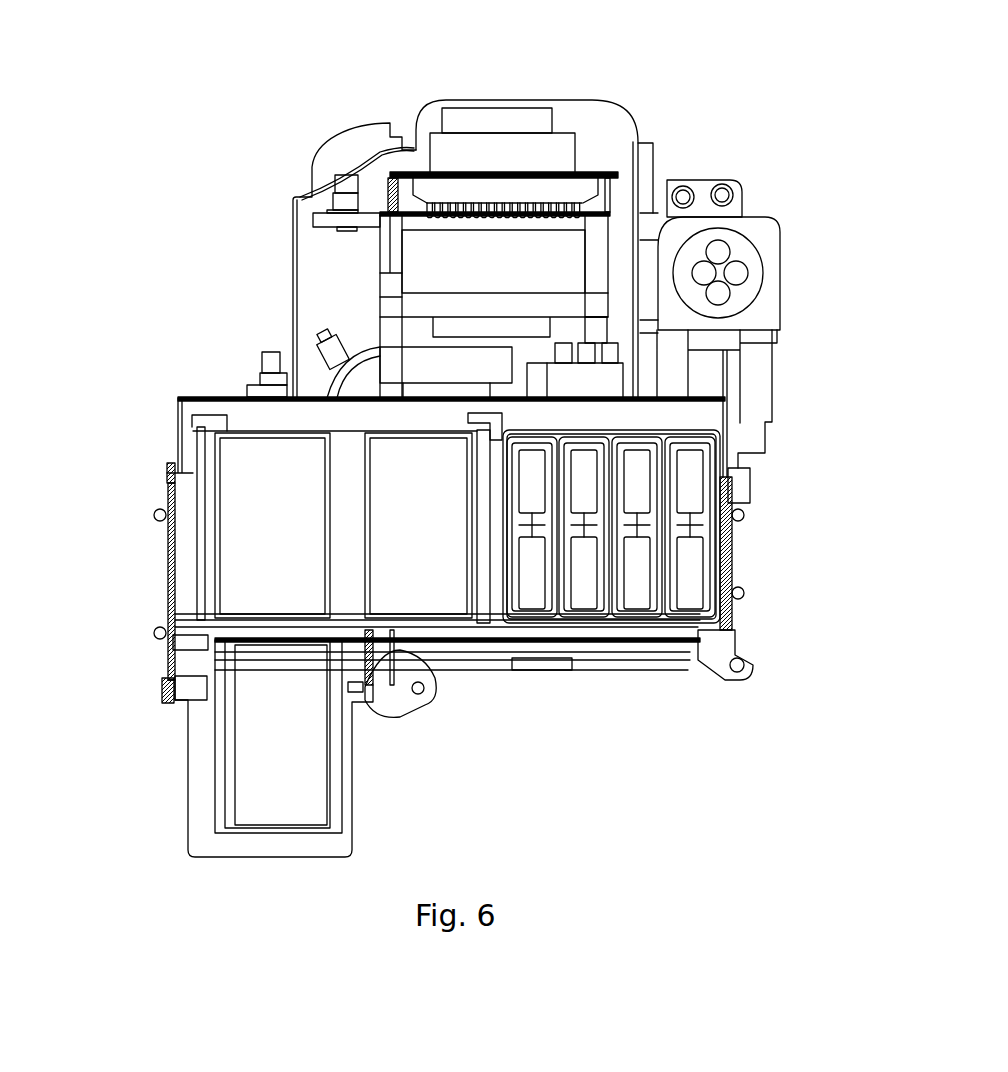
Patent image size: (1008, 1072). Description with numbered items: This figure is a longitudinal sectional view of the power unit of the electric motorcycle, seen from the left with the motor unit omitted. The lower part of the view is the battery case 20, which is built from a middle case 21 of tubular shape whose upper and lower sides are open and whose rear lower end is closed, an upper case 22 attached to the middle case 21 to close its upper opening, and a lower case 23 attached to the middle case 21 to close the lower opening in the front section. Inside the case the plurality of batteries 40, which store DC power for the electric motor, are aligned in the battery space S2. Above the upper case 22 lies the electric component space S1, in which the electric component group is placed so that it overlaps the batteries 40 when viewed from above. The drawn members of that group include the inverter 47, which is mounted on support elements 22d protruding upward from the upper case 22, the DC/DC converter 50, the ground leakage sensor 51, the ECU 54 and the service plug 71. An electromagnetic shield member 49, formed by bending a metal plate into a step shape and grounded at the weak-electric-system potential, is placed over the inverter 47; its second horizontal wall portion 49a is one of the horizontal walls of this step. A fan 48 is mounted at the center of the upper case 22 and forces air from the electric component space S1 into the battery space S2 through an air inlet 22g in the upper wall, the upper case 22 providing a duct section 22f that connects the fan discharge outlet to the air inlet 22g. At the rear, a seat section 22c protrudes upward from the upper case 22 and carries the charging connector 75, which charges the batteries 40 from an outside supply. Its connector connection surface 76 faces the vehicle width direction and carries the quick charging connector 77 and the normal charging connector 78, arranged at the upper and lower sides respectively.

The battery case 20 is at (394, 627).
The middle case 21 is at (170, 562).
The upper case 22 is at (177, 443).
The seat section 22c is at (673, 373).
The support elements 22d is at (390, 330).
The duct section 22f is at (365, 325).
The air inlet 22g is at (350, 403).
The lower case 23 is at (227, 766).
The batteries 40 is at (277, 592).
The inverter 47 is at (425, 263).
The fan 48 is at (392, 370).
The electromagnetic shield member 49 is at (378, 178).
The second horizontal wall portion 49a is at (410, 130).
The DC/DC converter 50 is at (552, 190).
The ground leakage sensor 51 is at (512, 122).
The ECU 54 is at (478, 148).
The service plug 71 is at (345, 180).
The charging connector 75 is at (778, 233).
The connector connection surface 76 is at (768, 273).
The quick charging connector 77 is at (738, 255).
The normal charging connector 78 is at (728, 190).
The electric component space S1 is at (603, 132).
The battery space S2 is at (698, 413).